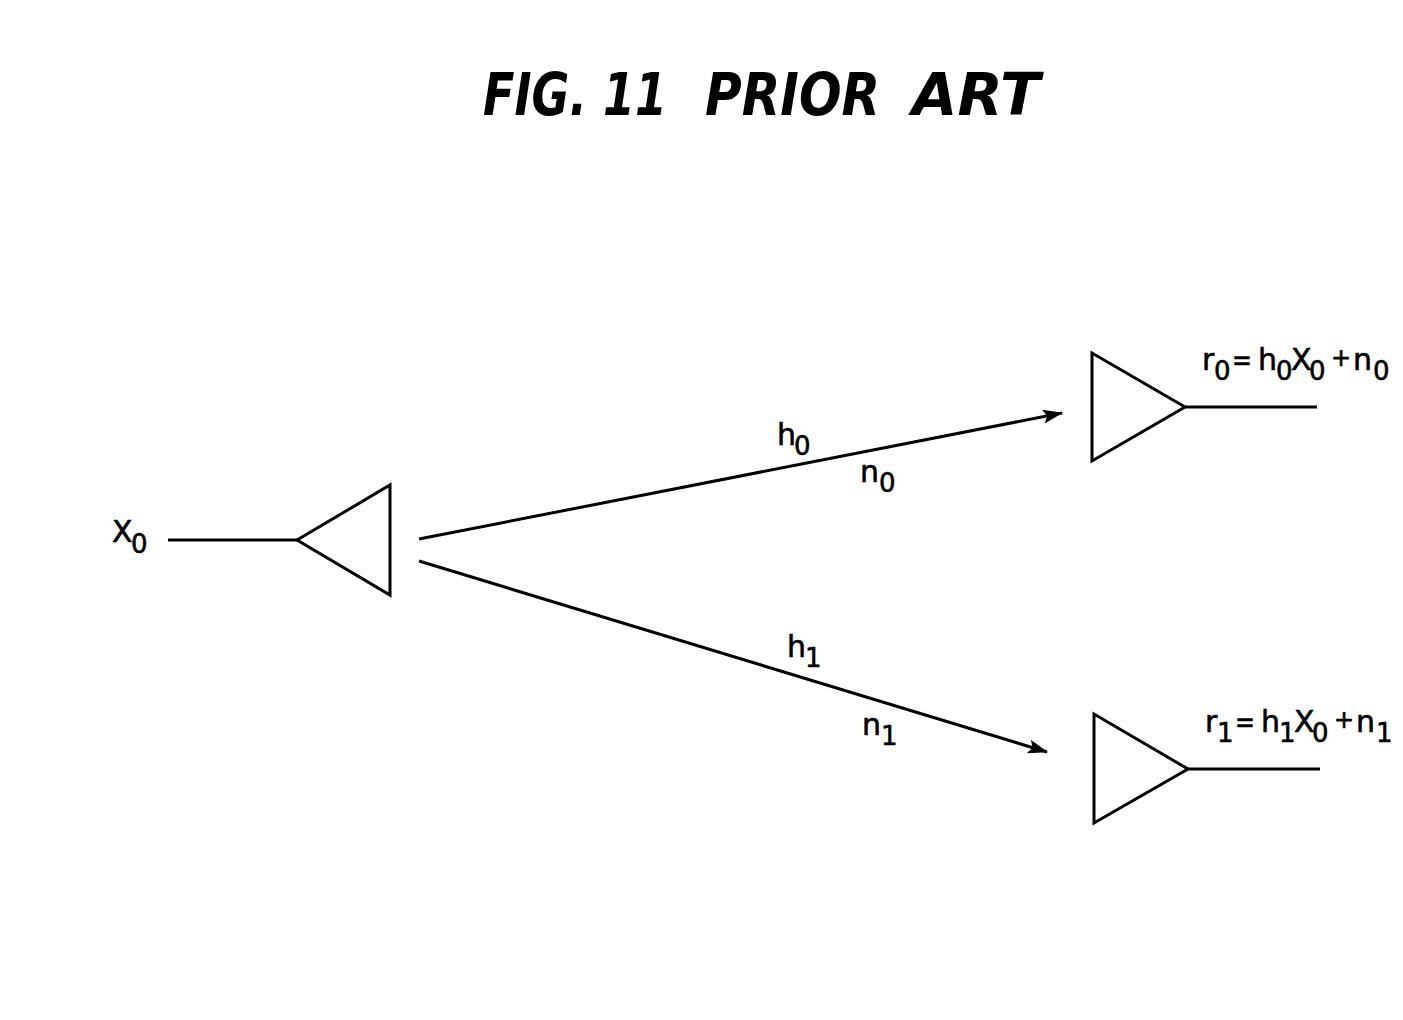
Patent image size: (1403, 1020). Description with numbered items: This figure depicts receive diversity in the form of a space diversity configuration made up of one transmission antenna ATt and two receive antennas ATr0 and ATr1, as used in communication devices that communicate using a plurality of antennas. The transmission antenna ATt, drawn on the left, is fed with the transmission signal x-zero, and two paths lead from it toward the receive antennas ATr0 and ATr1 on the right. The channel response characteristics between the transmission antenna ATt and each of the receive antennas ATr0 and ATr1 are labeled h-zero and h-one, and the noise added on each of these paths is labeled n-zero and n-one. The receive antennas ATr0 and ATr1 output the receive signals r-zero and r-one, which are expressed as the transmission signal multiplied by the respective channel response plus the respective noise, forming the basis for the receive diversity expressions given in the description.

The transmission antenna ATt is at (352, 578).
The receive antenna ATr0 is at (1140, 435).
The receive antenna ATr1 is at (1143, 797).